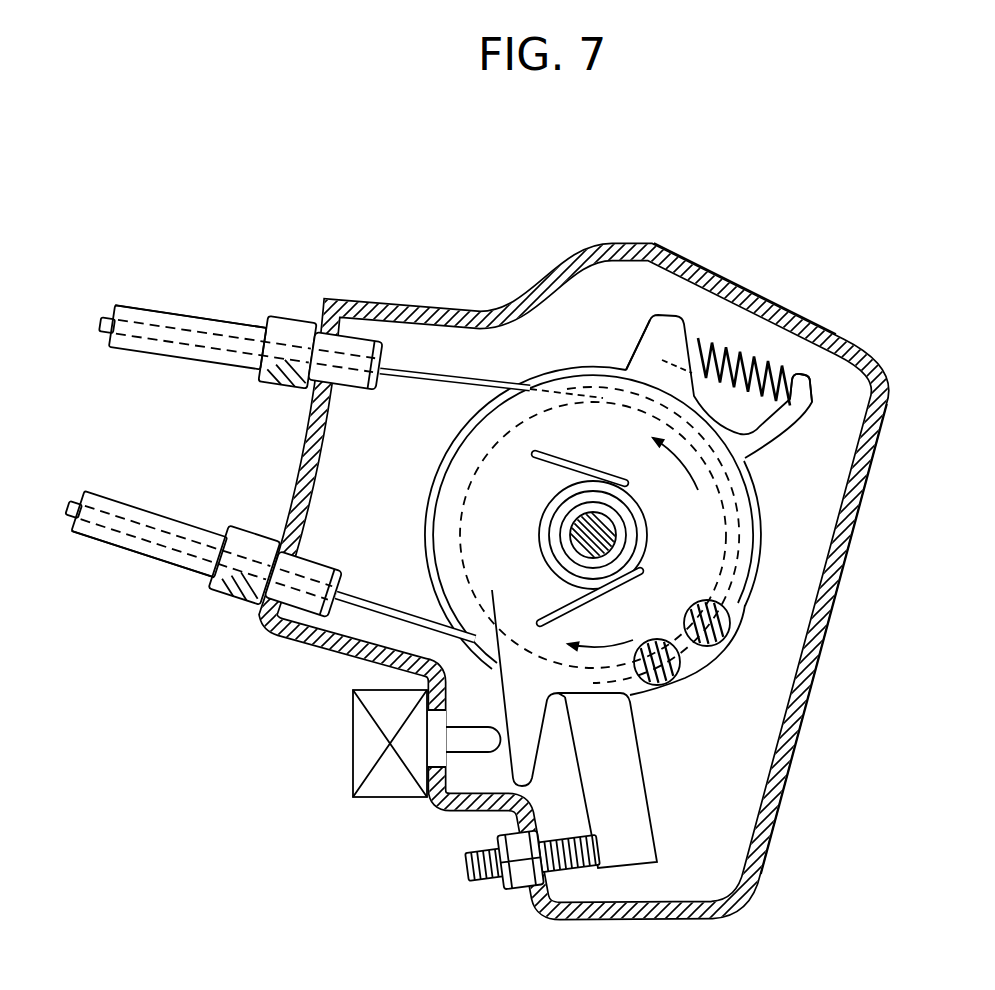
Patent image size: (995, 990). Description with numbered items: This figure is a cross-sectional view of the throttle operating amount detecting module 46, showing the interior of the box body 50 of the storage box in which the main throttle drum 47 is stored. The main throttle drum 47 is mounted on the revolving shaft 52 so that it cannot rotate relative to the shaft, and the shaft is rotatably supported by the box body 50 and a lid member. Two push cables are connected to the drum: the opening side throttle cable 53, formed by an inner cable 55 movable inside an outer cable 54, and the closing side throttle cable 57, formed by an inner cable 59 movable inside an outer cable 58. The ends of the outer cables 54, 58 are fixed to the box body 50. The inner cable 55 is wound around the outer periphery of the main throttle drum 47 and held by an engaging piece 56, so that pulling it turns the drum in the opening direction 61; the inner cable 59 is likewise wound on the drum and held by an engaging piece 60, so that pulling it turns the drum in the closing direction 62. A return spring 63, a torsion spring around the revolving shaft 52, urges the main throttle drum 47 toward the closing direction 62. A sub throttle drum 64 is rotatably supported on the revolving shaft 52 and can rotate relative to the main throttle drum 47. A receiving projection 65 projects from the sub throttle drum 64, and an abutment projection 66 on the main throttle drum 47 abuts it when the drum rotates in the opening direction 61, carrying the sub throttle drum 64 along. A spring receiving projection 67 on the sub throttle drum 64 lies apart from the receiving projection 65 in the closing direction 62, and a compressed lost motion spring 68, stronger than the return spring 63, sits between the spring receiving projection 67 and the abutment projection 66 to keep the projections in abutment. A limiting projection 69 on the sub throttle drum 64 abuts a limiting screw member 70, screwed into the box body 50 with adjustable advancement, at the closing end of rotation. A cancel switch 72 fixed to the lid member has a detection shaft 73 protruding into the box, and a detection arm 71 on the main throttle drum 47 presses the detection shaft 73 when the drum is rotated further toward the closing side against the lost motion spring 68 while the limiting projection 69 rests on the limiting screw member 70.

The throttle operating amount detecting module 46 is at (410, 298).
The main throttle drum 47 is at (450, 520).
The box body 50 is at (646, 243).
The revolving shaft 52 is at (607, 553).
The opening side throttle cable 53 is at (222, 312).
The outer cable 54 is at (157, 312).
The inner cable 55 is at (460, 372).
The engaging piece 56 is at (713, 646).
The closing side throttle cable 57 is at (160, 565).
The outer cable 58 is at (118, 540).
The inner cable 59 is at (367, 605).
The engaging piece 60 is at (652, 686).
The opening direction 61 is at (697, 452).
The closing direction 62 is at (602, 650).
The return spring 63 is at (565, 457).
The sub throttle drum 64 is at (767, 563).
The receiving projection 65 is at (643, 332).
The abutment projection 66 is at (688, 334).
The spring receiving projection 67 is at (793, 380).
The lost motion spring 68 is at (735, 350).
The limiting projection 69 is at (628, 862).
The limiting screw member 70 is at (472, 852).
The detection arm 71 is at (523, 745).
The cancel switch 72 is at (363, 733).
The detection shaft 73 is at (481, 735).